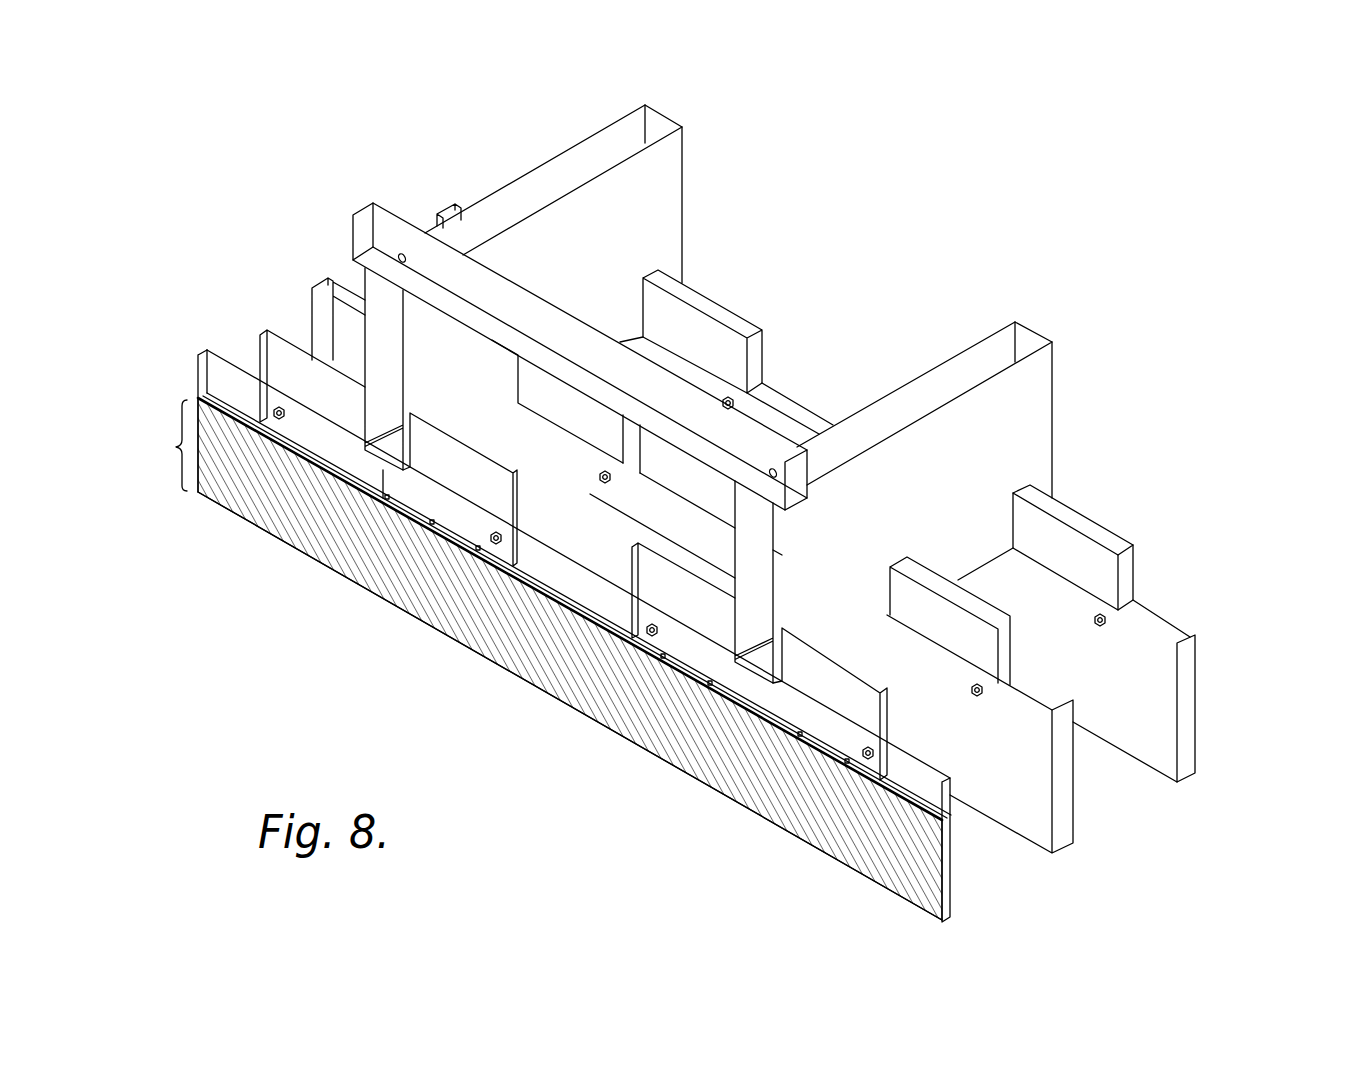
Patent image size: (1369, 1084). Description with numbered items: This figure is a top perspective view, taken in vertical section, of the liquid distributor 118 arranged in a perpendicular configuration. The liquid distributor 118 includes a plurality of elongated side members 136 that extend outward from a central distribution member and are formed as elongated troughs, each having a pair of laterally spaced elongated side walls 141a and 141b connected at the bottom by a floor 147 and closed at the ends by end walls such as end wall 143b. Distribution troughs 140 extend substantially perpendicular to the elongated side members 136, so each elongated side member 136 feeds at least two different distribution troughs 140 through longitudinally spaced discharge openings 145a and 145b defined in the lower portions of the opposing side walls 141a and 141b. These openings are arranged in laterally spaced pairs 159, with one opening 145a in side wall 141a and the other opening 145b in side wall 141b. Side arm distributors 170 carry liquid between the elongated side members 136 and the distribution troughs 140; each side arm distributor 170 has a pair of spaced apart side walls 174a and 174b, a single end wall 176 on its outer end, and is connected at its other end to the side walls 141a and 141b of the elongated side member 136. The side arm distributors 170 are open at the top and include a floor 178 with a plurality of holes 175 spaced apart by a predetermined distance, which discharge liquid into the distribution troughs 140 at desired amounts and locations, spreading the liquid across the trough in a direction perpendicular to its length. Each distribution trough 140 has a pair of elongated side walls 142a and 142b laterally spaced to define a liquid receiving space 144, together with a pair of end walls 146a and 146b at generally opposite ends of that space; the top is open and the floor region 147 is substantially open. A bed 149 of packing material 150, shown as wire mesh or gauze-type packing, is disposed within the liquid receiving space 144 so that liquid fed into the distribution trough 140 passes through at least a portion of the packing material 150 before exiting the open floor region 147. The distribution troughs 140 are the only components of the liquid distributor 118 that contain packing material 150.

The liquid distributor 118 is at (1135, 165).
The elongated side member 136 is at (792, 281).
The distribution trough 140 is at (338, 272).
The side wall 141a is at (665, 168).
The side wall 141b is at (735, 233).
The side wall 142a is at (1043, 833).
The side wall 142b is at (1216, 748).
The end wall 143b is at (658, 128).
The liquid receiving space 144 is at (225, 360).
The discharge opening 145a is at (432, 425).
The discharge opening 145b is at (367, 413).
The end wall 146a is at (950, 905).
The end wall 146b is at (197, 367).
The floor 147 is at (395, 455).
The bed 149 is at (175, 447).
The packing material 150 is at (687, 760).
The pair of openings 159 is at (388, 381).
The side arm distributor 170 is at (931, 432).
The side wall 174a is at (1120, 545).
The side wall 174b is at (1068, 548).
The hole 175 is at (338, 471).
The end wall 176 is at (1130, 570).
The floor 178 is at (499, 562).